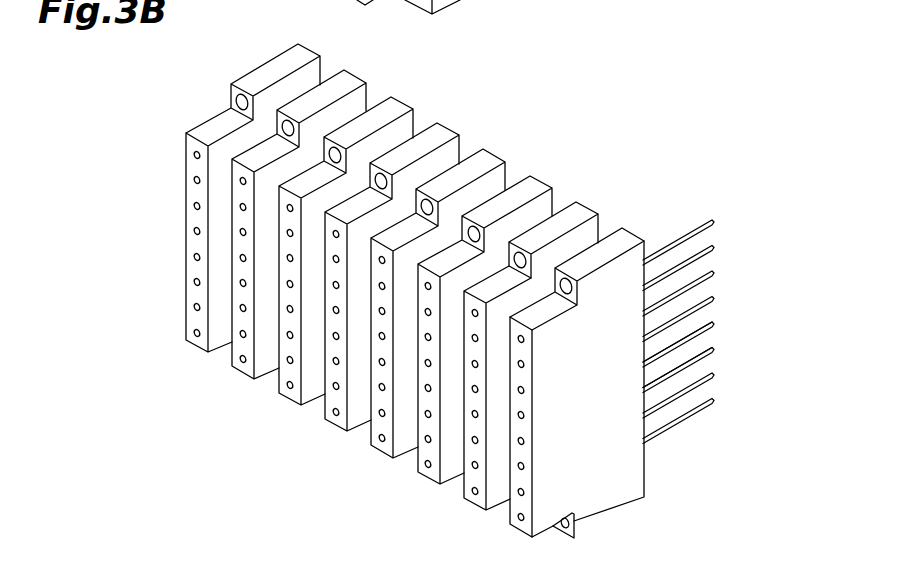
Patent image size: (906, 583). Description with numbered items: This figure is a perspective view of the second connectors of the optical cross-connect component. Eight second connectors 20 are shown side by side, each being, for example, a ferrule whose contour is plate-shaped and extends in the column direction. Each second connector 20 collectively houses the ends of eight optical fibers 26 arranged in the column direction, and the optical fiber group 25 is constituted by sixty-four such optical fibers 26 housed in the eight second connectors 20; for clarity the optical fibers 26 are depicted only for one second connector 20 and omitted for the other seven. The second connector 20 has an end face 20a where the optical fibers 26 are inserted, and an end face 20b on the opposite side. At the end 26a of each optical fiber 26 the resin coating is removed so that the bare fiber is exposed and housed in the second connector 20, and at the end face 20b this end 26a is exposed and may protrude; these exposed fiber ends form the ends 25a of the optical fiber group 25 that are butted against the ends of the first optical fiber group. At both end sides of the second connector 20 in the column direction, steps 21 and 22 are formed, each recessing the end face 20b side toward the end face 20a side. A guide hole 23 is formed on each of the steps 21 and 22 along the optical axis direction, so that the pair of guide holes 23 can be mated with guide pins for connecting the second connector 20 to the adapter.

The second connector 20 is at (582, 213).
The end face 20a is at (645, 461).
The end face 20b is at (506, 529).
The step 21 is at (578, 533).
The step 22 is at (598, 220).
The guide hole 23 is at (577, 291).
The optical fiber group 25 is at (716, 342).
The ends 25a is at (524, 517).
The optical fiber 26 is at (710, 232).
The end 26a is at (577, 428).